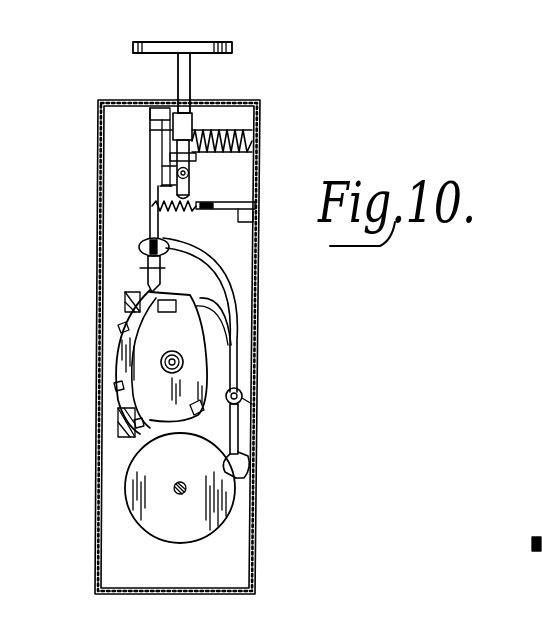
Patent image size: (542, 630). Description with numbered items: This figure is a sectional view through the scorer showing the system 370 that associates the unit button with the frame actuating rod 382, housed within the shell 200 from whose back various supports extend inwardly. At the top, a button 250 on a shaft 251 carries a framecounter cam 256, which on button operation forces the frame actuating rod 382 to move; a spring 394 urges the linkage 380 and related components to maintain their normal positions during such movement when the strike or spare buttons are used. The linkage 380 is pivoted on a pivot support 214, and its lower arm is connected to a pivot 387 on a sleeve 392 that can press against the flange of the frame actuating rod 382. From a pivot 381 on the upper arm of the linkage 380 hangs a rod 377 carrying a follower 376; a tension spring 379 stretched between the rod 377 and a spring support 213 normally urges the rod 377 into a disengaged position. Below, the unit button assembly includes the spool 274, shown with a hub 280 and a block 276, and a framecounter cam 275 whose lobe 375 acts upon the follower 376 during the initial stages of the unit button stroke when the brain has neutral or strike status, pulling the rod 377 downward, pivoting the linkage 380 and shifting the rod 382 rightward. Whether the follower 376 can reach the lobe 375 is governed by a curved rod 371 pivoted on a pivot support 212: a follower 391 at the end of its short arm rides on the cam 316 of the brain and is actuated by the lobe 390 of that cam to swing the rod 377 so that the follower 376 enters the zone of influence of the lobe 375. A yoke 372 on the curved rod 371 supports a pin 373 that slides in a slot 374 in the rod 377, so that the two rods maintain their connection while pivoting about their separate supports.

The shell 200 is at (94, 122).
The button 250 is at (150, 44).
The shaft 251 is at (192, 72).
The pivot 381 is at (165, 108).
The framecounter cam 256 is at (262, 110).
The spring 394 is at (258, 127).
The sleeve 392 is at (258, 153).
The frame actuating rod 382 is at (258, 167).
The tension spring 379 is at (258, 189).
The spring support 213 is at (258, 226).
The rod 377 is at (154, 207).
The pin 373 is at (168, 240).
The yoke 372 is at (258, 251).
The pivot support 212 is at (250, 404).
The lobe 390 is at (258, 430).
The curved rod 371 is at (258, 446).
The follower 391 is at (244, 478).
The follower 376 is at (207, 291).
The spool 274 is at (190, 332).
The hub 280 is at (183, 358).
The framecounter cam 275 is at (125, 293).
The lobe 375 is at (142, 276).
The slot 374 is at (150, 258).
The pivot support 214 is at (172, 148).
The linkage 380 is at (172, 166).
The pivot 387 is at (172, 185).
The block 276 is at (118, 425).
The cam 316 is at (148, 527).
The system 370 is at (262, 504).